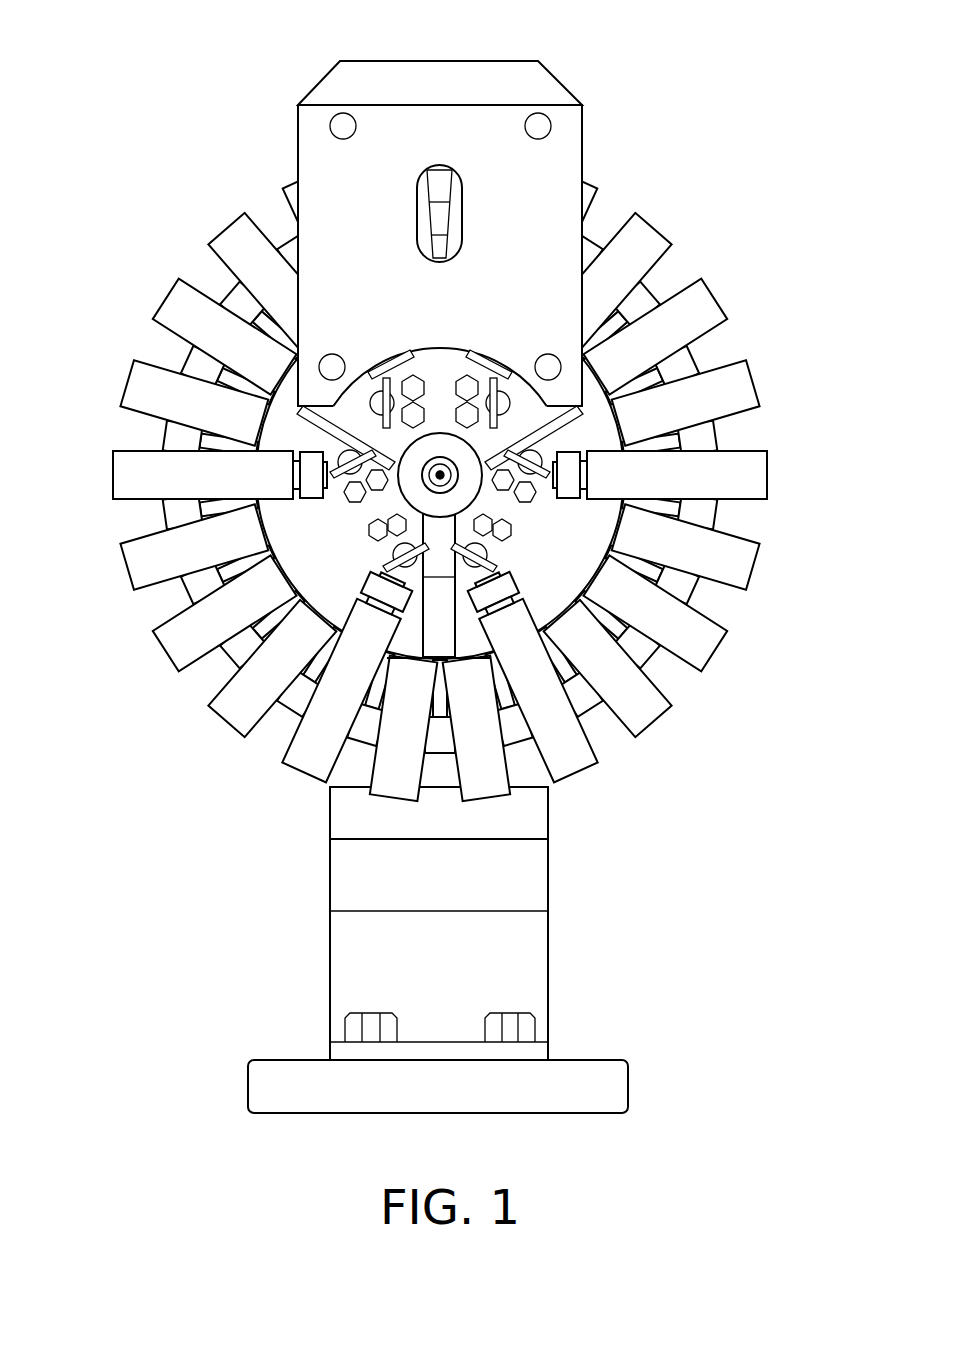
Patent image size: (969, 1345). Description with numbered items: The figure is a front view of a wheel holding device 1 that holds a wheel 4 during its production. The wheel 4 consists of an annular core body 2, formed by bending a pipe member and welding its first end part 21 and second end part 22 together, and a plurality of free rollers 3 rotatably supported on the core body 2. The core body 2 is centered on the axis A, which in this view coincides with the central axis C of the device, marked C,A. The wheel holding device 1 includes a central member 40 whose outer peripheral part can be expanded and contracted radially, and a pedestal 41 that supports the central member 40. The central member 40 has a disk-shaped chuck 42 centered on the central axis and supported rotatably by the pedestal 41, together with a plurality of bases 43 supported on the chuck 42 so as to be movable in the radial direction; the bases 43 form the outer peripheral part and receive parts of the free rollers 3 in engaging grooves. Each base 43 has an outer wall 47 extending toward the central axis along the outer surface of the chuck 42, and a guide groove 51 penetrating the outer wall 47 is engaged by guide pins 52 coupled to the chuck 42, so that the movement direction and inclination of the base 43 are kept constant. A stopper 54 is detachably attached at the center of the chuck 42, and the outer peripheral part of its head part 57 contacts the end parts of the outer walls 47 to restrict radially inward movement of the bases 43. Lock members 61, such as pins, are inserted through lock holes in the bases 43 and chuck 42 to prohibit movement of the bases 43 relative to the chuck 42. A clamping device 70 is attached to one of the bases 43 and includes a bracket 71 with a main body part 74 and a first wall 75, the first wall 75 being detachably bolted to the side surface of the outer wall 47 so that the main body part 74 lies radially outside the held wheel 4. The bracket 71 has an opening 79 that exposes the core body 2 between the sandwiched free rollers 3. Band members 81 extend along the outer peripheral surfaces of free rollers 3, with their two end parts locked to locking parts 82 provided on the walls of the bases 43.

The wheel holding device 1 is at (180, 42).
The core body 2 is at (175, 442).
The free rollers 3 is at (132, 572).
The wheel 4 is at (178, 673).
The first end part 21 is at (452, 167).
The second end part 22 is at (430, 167).
The central member 40 is at (562, 612).
The pedestal 41 is at (537, 965).
The chuck 42 is at (440, 567).
The bases 43 is at (568, 552).
The outer wall 47 is at (598, 528).
The guide groove 51 is at (533, 495).
The guide pin 52 is at (525, 513).
The stopper 54 is at (445, 428).
The head part 57 is at (435, 440).
The lock member 61 is at (540, 448).
The clamping device 70 is at (556, 56).
The bracket 71 is at (590, 108).
The main body part 74 is at (525, 72).
The first wall 75 is at (566, 162).
The opening 79 is at (422, 227).
The band member 81 is at (750, 473).
The locking parts 82 is at (560, 468).
The central axis and axis C,A is at (423, 478).